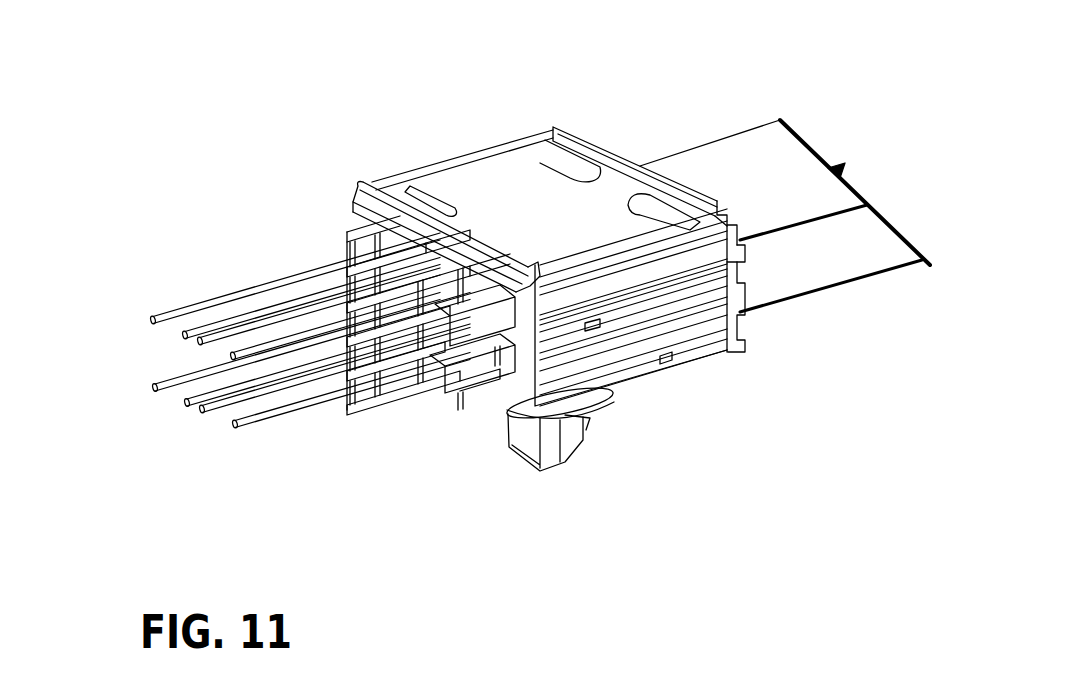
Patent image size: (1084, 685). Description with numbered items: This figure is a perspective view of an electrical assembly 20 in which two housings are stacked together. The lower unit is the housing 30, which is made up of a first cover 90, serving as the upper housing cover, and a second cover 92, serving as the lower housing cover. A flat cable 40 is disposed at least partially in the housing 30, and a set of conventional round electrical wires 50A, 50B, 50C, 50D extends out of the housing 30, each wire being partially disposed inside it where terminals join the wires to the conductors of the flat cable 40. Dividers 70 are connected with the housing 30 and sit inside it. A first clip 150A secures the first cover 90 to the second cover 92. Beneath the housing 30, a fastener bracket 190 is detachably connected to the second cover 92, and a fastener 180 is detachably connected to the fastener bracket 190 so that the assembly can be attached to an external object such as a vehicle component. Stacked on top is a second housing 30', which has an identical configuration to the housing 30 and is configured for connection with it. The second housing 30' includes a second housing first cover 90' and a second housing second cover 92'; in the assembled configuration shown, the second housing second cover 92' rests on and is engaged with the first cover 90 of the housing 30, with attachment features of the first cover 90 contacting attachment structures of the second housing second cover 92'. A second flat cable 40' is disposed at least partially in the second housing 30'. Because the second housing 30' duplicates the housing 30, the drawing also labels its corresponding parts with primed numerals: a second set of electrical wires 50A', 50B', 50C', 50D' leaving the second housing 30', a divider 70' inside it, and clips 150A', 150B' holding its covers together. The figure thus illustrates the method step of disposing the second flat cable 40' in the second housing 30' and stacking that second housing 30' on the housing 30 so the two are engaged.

The electrical assembly 20 is at (277, 57).
The housing 30 is at (605, 315).
The second housing 30' is at (478, 168).
The flat cable 40 is at (839, 231).
The second flat cable 40' is at (710, 106).
The electrical wire 50A is at (308, 432).
The electrical wire 50B is at (285, 408).
The electrical wire 50C is at (267, 384).
The electrical wire 50D is at (259, 349).
The upper cable 50A' is at (318, 296).
The upper cable 50B' is at (298, 270).
The upper cable 50C' is at (271, 254).
The upper cable 50D' is at (245, 264).
The divider 70 is at (456, 388).
The upper cable channel 70' is at (389, 357).
The first cover 90 is at (479, 447).
The second housing first cover 90' is at (378, 218).
The second cover 92 is at (485, 438).
The second housing second cover 92' is at (420, 397).
The first clip 150A is at (673, 378).
The upper rail end 150A' is at (740, 190).
The top rail 150B' is at (588, 153).
The fastener 180 is at (577, 430).
The fastener bracket 190 is at (700, 350).